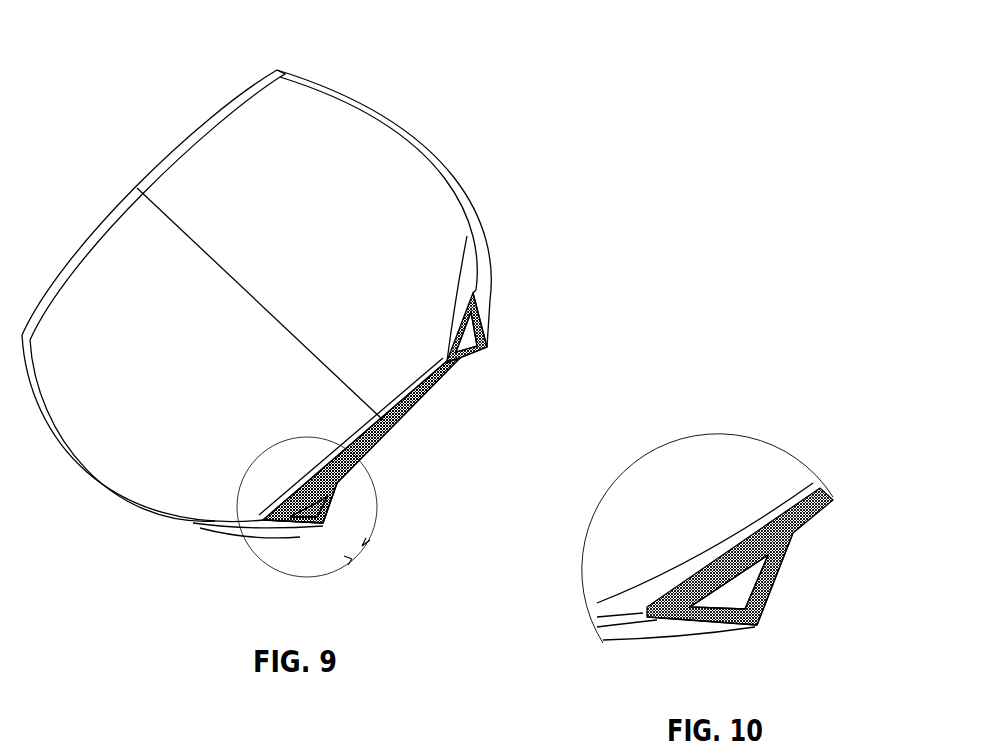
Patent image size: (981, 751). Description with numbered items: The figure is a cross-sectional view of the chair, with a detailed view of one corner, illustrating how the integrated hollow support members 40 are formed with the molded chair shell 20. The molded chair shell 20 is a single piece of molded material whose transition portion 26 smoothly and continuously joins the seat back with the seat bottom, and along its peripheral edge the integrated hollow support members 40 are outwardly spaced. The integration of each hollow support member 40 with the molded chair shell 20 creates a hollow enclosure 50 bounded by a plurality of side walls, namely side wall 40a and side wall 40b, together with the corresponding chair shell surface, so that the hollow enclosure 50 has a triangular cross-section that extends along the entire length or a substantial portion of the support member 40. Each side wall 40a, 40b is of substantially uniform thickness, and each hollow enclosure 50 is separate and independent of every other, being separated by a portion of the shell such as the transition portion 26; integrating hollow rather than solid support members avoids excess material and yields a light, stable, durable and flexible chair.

In FIG. 9, the molded chair shell 20 is at (442, 108).
In FIG. 9, the transition portion 26 is at (390, 430).
In FIG. 9, the integrated hollow support member 40 is at (496, 353).
In FIG. 10, the integrated hollow support member 40 is at (763, 642).
In FIG. 9, the side wall 40a is at (480, 310).
In FIG. 10, the side wall 40a is at (697, 613).
In FIG. 9, the side wall 40b is at (460, 362).
In FIG. 10, the side wall 40b is at (780, 573).
In FIG. 9, the hollow enclosure 50 is at (467, 333).
In FIG. 10, the hollow enclosure 50 is at (733, 587).